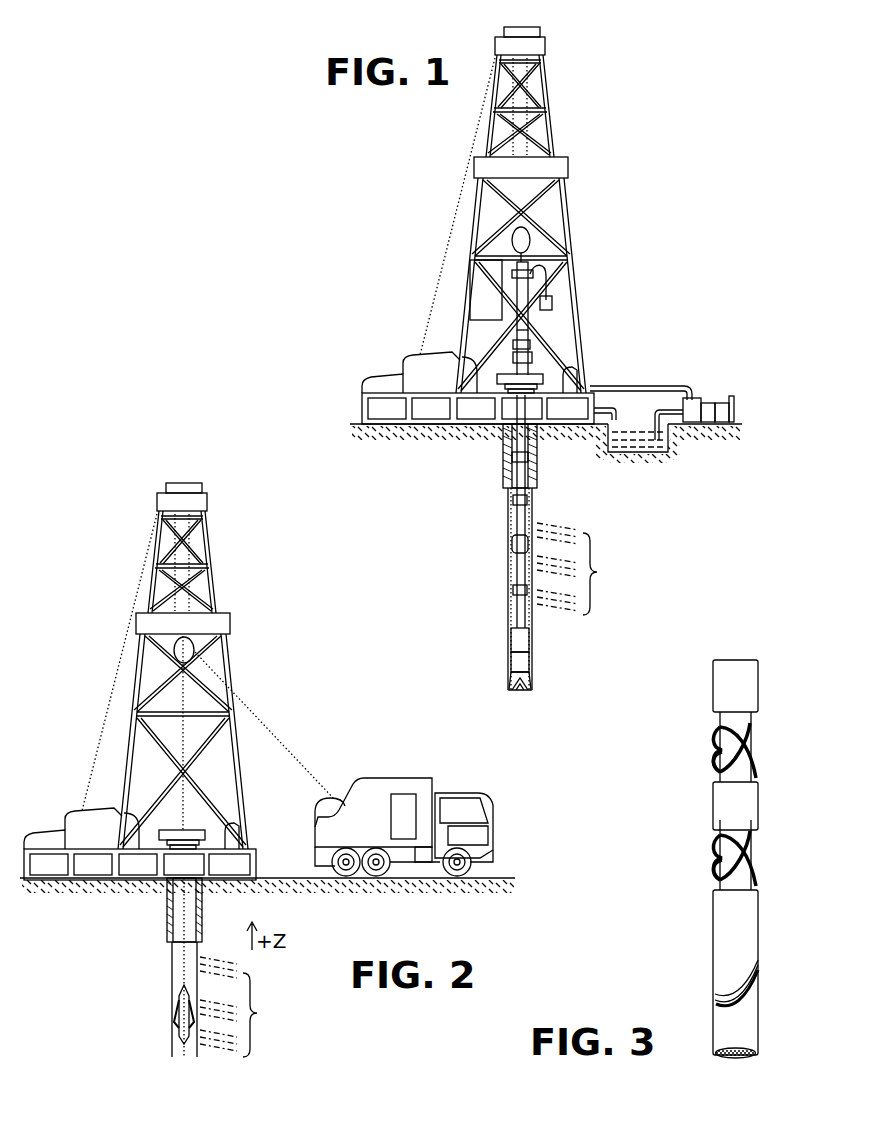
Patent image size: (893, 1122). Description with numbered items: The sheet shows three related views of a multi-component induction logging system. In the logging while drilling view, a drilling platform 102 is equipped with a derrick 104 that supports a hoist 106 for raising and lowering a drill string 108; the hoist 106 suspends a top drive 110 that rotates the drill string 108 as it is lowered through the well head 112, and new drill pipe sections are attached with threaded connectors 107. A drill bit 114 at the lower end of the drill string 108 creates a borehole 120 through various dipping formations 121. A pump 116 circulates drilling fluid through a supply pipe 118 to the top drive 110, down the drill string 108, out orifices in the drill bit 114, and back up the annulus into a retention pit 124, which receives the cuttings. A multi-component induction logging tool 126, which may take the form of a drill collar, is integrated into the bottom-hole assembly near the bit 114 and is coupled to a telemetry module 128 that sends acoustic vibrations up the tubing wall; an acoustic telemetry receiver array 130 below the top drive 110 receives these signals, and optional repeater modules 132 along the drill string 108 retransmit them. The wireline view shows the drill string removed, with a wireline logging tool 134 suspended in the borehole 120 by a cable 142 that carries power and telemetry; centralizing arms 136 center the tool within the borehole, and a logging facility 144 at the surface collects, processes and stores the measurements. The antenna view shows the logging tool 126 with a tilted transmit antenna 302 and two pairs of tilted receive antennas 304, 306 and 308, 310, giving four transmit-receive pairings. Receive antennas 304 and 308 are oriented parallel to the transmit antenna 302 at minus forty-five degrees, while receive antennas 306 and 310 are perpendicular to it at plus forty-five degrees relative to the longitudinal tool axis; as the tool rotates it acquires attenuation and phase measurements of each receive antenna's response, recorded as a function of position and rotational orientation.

In FIG. 1, the drilling platform 102 is at (365, 398).
In FIG. 2, the drilling platform 102 is at (267, 856).
In FIG. 1, the derrick 104 is at (553, 136).
In FIG. 2, the derrick 104 is at (209, 666).
In FIG. 1, the hoist 106 is at (528, 246).
In FIG. 2, the hoist 106 is at (231, 655).
In FIG. 1, the threaded connectors 107 is at (515, 498).
In FIG. 1, the drill string 108 is at (525, 527).
In FIG. 1, the top drive 110 is at (527, 290).
In FIG. 1, the well head 112 is at (537, 376).
In FIG. 2, the well head 112 is at (229, 809).
In FIG. 1, the drill bit 114 is at (527, 678).
In FIG. 1, the pump 116 is at (695, 402).
In FIG. 1, the supply pipe 118 is at (655, 388).
In FIG. 1, the borehole 120 is at (508, 538).
In FIG. 1, the formations 121 is at (590, 569).
In FIG. 2, the formations 121 is at (253, 1007).
In FIG. 1, the retention pit 124 is at (613, 458).
In FIG. 1, the multi-component induction logging tool 126 is at (517, 658).
In FIG. 3, the multi-component induction logging tool 126 is at (713, 1050).
In FIG. 1, the telemetry module 128 is at (515, 640).
In FIG. 1, the acoustic telemetry receiver array 130 is at (524, 342).
In FIG. 1, the repeater modules 132 is at (517, 552).
In FIG. 2, the wireline logging tool 134 is at (183, 1005).
In FIG. 2, the centralizing arms 136 is at (178, 1020).
In FIG. 2, the cable 142 is at (247, 712).
In FIG. 2, the logging facility 144 is at (372, 783).
In FIG. 3, the tilted transmit antenna 302 is at (716, 1000).
In FIG. 3, the tilted receive antenna 304 is at (712, 867).
In FIG. 3, the tilted receive antenna 306 is at (712, 843).
In FIG. 3, the tilted receive antenna 308 is at (712, 760).
In FIG. 3, the tilted receive antenna 310 is at (712, 736).